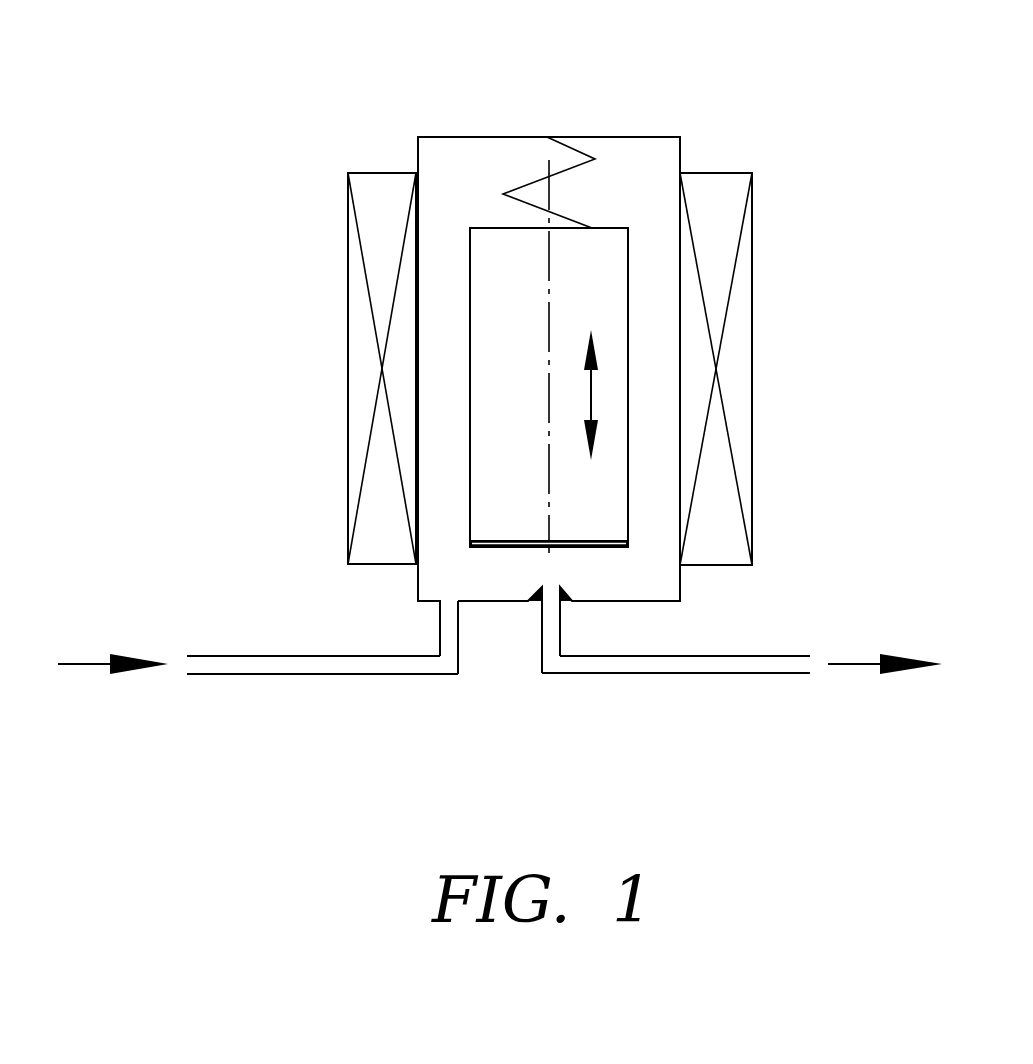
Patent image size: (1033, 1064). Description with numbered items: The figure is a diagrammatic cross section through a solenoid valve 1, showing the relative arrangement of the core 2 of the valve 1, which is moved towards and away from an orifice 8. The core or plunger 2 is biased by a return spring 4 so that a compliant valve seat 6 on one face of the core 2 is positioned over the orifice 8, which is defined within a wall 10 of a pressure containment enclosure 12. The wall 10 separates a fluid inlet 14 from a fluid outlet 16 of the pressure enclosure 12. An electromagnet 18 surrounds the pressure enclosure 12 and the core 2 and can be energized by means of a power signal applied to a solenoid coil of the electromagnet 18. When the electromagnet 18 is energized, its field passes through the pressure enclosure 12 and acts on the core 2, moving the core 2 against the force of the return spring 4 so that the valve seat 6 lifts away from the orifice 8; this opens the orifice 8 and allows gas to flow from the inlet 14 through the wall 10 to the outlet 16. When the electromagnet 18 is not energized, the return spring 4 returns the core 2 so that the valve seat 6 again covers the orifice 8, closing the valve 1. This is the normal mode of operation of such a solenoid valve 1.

The solenoid valve 1 is at (474, 97).
The core 2 is at (652, 276).
The return spring 4 is at (593, 117).
The compliant valve seat 6 is at (434, 536).
The orifice 8 is at (563, 560).
The wall 10 is at (502, 637).
The pressure containment enclosure 12 is at (440, 137).
The fluid inlet 14 is at (268, 618).
The fluid outlet 16 is at (790, 628).
The electromagnet 18 is at (790, 343).